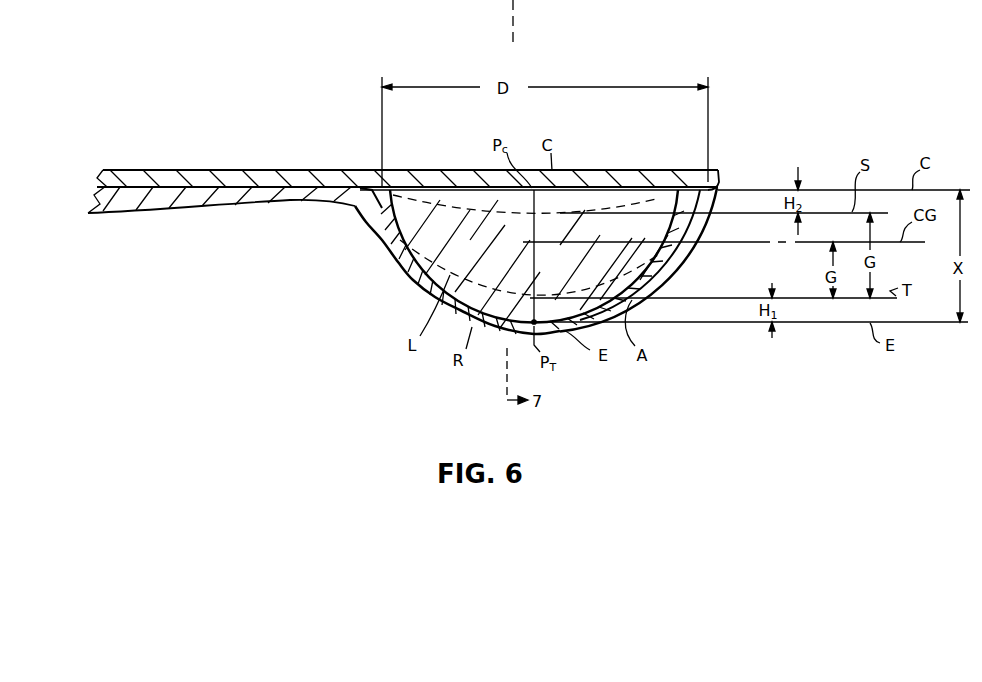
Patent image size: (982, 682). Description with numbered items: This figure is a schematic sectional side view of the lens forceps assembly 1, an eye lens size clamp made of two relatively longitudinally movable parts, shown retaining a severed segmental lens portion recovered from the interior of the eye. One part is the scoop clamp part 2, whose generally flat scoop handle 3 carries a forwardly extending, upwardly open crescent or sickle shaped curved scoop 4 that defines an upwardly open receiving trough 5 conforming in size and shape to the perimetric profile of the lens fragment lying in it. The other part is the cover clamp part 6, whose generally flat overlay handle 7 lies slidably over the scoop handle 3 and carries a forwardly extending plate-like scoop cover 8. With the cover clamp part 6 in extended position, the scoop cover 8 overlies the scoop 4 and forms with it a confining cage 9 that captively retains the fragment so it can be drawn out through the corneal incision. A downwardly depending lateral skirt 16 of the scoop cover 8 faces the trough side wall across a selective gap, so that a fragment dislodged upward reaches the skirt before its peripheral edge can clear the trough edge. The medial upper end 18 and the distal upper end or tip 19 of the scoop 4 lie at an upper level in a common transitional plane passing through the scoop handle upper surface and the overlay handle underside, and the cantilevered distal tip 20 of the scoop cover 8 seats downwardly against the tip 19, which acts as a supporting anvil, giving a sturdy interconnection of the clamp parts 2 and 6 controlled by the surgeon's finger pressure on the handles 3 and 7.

The lens forceps assembly 1 is at (103, 123).
The scoop clamp part 2 is at (385, 250).
The scoop handle 3 is at (150, 198).
The scoop 4 is at (408, 290).
The receiving trough 5 is at (650, 303).
The cover clamp part 6 is at (202, 176).
The overlay handle 7 is at (150, 176).
The scoop cover 8 is at (462, 178).
The confining cage 9 is at (372, 236).
The lateral skirt 16 is at (589, 200).
The medial upper end 18 is at (372, 190).
The distal upper end or tip 19 is at (720, 189).
The distal end or tip of scoop cover 20 is at (718, 188).